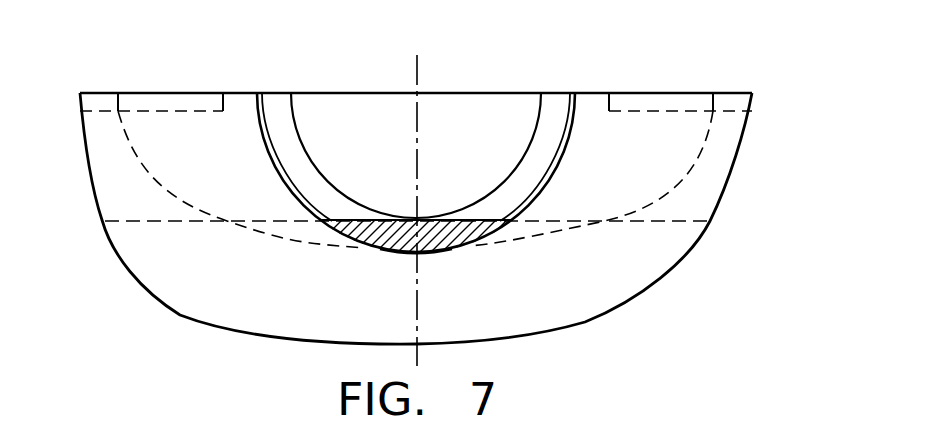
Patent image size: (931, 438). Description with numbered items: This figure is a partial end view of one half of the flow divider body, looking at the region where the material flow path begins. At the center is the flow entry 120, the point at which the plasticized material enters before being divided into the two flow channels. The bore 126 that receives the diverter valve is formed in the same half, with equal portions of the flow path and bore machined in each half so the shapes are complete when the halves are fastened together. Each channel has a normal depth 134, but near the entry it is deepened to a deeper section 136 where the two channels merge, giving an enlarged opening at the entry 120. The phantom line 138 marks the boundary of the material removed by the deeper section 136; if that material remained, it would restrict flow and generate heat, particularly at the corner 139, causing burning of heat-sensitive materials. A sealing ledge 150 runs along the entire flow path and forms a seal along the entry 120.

The flow entry 120 is at (261, 96).
The bore 126 is at (541, 102).
The normal depth 134 is at (692, 222).
The deeper section 136 is at (433, 258).
The phantom line 138 is at (337, 210).
The corner 139 is at (421, 221).
The sealing ledge 150 is at (240, 93).